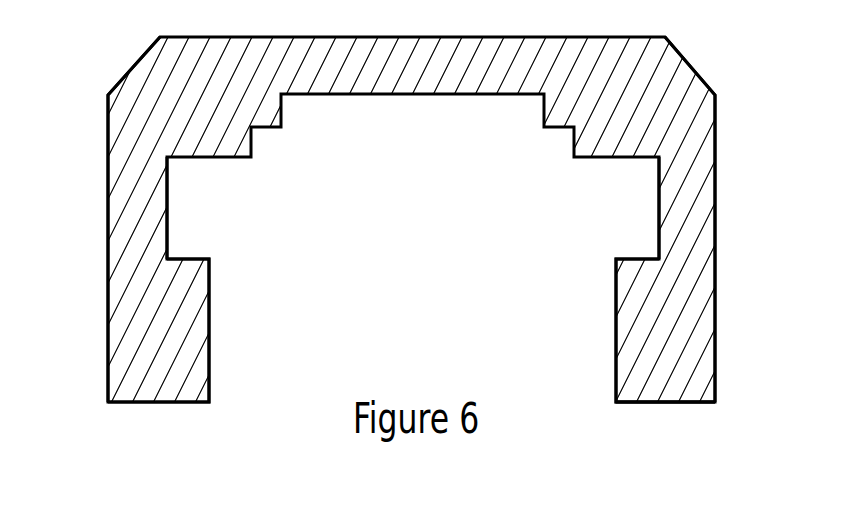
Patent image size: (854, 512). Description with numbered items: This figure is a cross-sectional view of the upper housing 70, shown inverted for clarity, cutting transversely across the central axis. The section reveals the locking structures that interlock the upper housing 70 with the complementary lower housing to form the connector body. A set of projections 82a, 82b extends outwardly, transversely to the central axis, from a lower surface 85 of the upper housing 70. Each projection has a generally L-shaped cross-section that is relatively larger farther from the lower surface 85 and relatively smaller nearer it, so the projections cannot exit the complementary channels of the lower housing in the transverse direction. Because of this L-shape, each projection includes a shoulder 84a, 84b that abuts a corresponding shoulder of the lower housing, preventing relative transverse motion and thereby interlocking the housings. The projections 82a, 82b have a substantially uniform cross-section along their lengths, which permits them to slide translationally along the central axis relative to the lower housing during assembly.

The upper housing 70 is at (718, 200).
The projection 82a is at (137, 245).
The projection 82b is at (683, 243).
The shoulder 84a is at (620, 328).
The shoulder 84b is at (205, 330).
The lower surface 85 is at (665, 403).